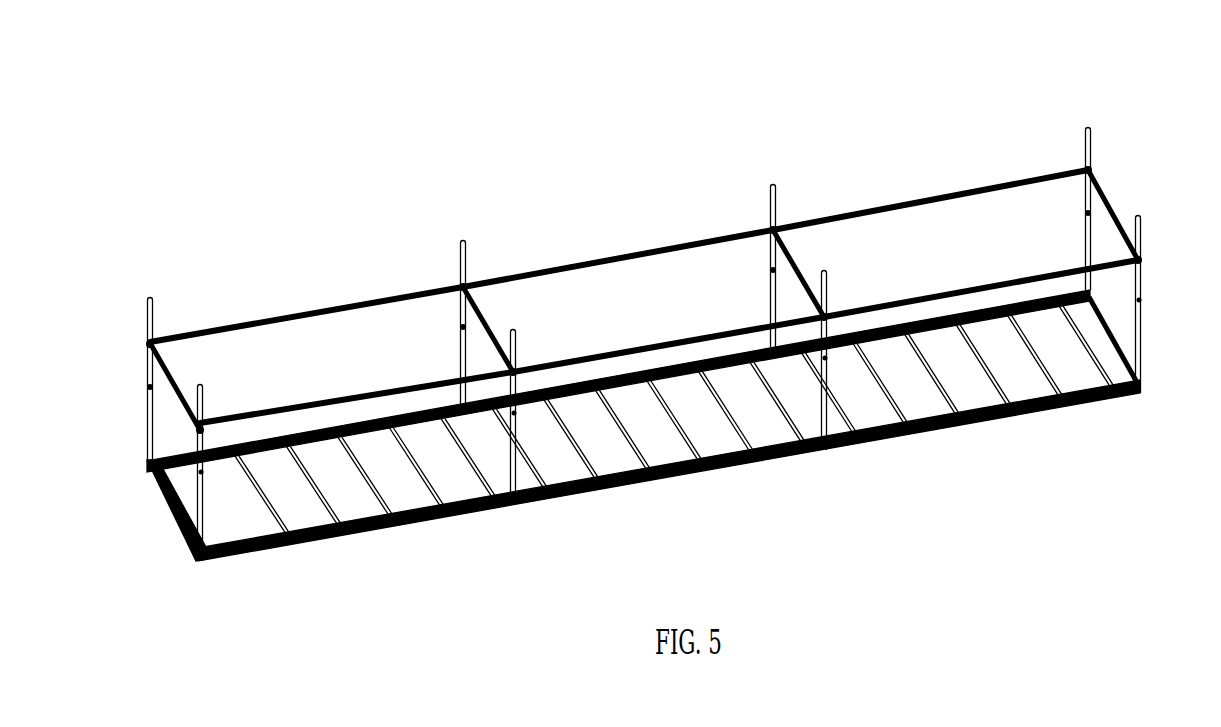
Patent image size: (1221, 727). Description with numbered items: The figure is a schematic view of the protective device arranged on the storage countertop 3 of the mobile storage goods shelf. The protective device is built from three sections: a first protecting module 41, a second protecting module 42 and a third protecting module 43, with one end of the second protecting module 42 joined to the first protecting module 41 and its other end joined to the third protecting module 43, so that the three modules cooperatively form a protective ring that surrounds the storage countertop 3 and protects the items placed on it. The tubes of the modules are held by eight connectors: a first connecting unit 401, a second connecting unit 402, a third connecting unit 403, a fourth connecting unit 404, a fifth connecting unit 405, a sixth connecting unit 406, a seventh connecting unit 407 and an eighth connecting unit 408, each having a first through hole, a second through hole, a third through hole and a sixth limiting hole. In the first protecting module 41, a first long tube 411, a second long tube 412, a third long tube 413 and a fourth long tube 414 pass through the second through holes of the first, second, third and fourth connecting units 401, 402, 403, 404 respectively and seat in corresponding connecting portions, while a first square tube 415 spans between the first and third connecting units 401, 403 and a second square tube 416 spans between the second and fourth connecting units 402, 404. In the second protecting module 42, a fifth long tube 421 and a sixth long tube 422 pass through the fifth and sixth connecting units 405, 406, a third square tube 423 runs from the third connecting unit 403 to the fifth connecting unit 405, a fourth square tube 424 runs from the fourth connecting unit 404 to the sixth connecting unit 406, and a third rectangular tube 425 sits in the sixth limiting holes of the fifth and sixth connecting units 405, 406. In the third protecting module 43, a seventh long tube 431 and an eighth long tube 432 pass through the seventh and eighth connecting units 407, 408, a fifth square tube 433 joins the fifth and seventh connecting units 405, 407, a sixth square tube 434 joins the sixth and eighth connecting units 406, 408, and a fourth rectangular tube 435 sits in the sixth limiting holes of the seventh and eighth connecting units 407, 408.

The storage countertop 3 is at (643, 425).
The first protecting module 41 is at (283, 371).
The second protecting module 42 is at (594, 330).
The third protecting module 43 is at (917, 255).
The first connecting unit 401 is at (232, 453).
The second connecting unit 402 is at (103, 321).
The third connecting unit 403 is at (452, 335).
The fourth connecting unit 404 is at (430, 244).
The fifth connecting unit 405 is at (762, 297).
The sixth connecting unit 406 is at (745, 191).
The seventh connecting unit 407 is at (1174, 236).
The eighth connecting unit 408 is at (1052, 137).
The first long tube 411 is at (145, 510).
The second long tube 412 is at (110, 380).
The third long tube 413 is at (454, 358).
The fourth long tube 414 is at (415, 281).
The first square tube 415 is at (320, 367).
The second square tube 416 is at (306, 300).
The fifth long tube 421 is at (694, 268).
The sixth long tube 422 is at (714, 224).
The third square tube 423 is at (668, 334).
The fourth square tube 424 is at (618, 250).
The third rectangular tube 425 is at (753, 273).
The seventh long tube 431 is at (1179, 304).
The eighth long tube 432 is at (1058, 201).
The fifth square tube 433 is at (981, 264).
The sixth square tube 434 is at (930, 176).
The fourth rectangular tube 435 is at (1141, 205).